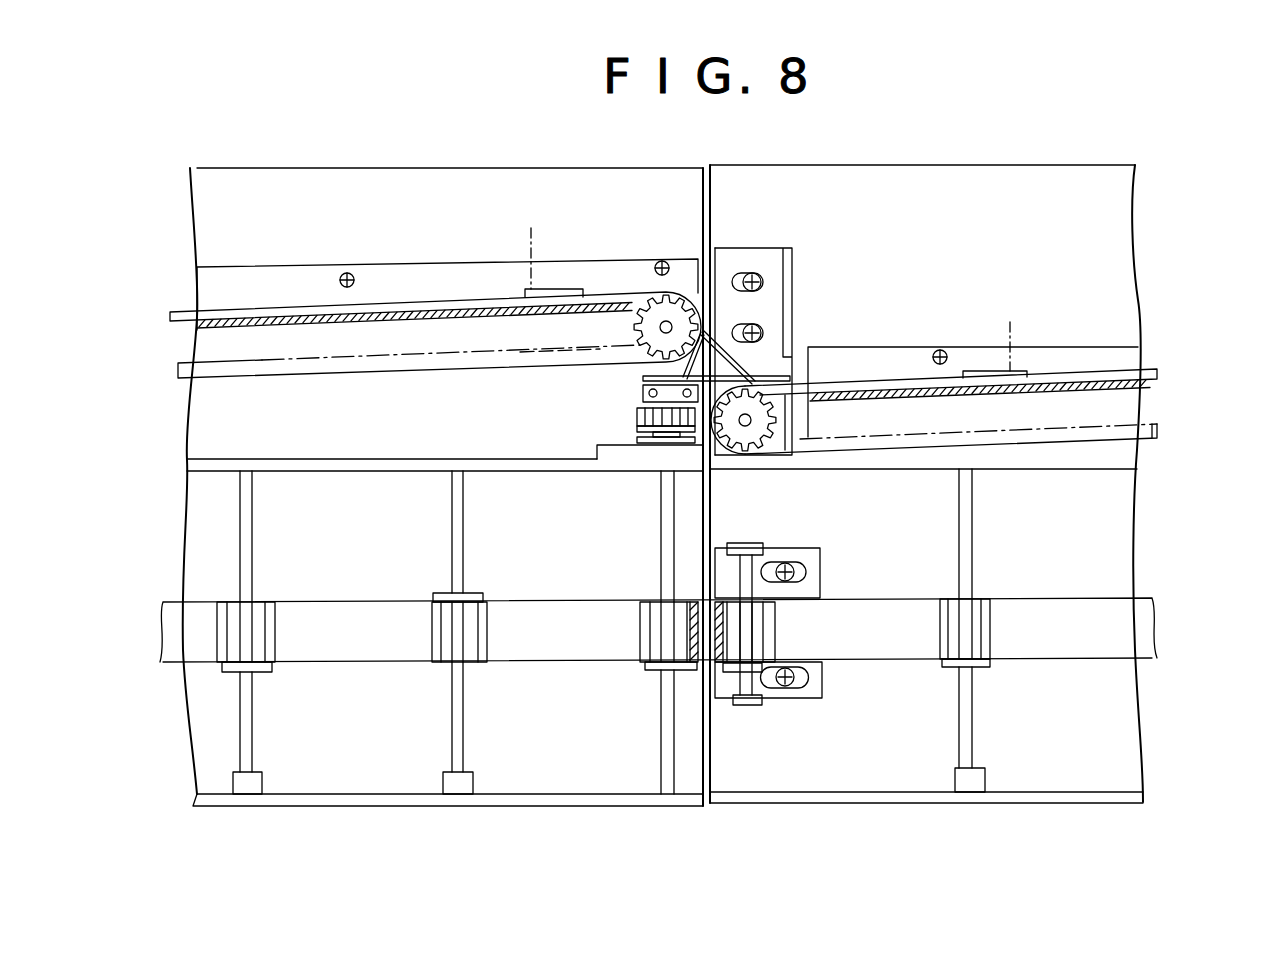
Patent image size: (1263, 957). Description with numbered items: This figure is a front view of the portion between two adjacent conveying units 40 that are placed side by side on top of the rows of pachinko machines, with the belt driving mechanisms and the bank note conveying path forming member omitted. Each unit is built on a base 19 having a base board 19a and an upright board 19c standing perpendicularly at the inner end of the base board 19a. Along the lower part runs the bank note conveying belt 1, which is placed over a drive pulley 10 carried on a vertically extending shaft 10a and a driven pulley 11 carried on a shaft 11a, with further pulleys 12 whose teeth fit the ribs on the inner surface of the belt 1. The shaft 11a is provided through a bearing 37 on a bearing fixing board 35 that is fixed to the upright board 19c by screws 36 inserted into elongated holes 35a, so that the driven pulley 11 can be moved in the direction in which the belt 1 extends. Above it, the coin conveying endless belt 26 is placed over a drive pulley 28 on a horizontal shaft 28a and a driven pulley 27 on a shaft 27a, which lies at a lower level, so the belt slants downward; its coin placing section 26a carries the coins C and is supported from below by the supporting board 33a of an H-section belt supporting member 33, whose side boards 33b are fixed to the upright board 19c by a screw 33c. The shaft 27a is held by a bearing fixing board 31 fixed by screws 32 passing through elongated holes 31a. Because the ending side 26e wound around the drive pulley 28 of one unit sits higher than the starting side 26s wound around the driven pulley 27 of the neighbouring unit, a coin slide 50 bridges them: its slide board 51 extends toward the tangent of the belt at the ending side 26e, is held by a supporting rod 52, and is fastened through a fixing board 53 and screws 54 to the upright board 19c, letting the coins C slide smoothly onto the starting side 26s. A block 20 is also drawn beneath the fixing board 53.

The bank note conveying belt 1 is at (565, 650).
The drive pulley 10 is at (645, 655).
The shaft of the drive pulley 10a is at (688, 745).
The driven pulley 11 is at (775, 632).
The shaft of the driven pulley 11a is at (745, 685).
The pulley 12 is at (432, 640).
The base 19 is at (292, 168).
The base board 19a is at (328, 806).
The upright board 19c is at (207, 433).
The base 20 is at (640, 437).
The coin conveying endless belt 26 is at (258, 373).
The coin placing section 26a is at (438, 300).
The ending side 26e is at (693, 300).
The starting side 26s is at (763, 375).
The driven pulley 27 is at (765, 440).
The shaft of the driven pulley 27a is at (745, 426).
The drive pulley 28 is at (651, 294).
The shaft of the drive pulley 28a is at (666, 327).
The bearing fixing board 31 is at (775, 287).
The elongated holes 31a is at (742, 272).
The screws 32 is at (762, 273).
The belt supporting member 33 is at (212, 266).
The supporting board 33a is at (225, 322).
The side boards 33b is at (258, 290).
The screw 33c is at (347, 273).
The bearing fixing board 35 is at (822, 688).
The elongated holes 35a is at (800, 687).
The screws 36 is at (787, 690).
The bearing 37 is at (752, 705).
The conveying unit 40 is at (207, 822).
The coin slide 50 is at (745, 373).
The slide board 51 is at (711, 347).
The supporting rod 52 is at (650, 367).
The fixing board 53 is at (650, 393).
The screws 54 is at (640, 415).
The coins C is at (774, 286).